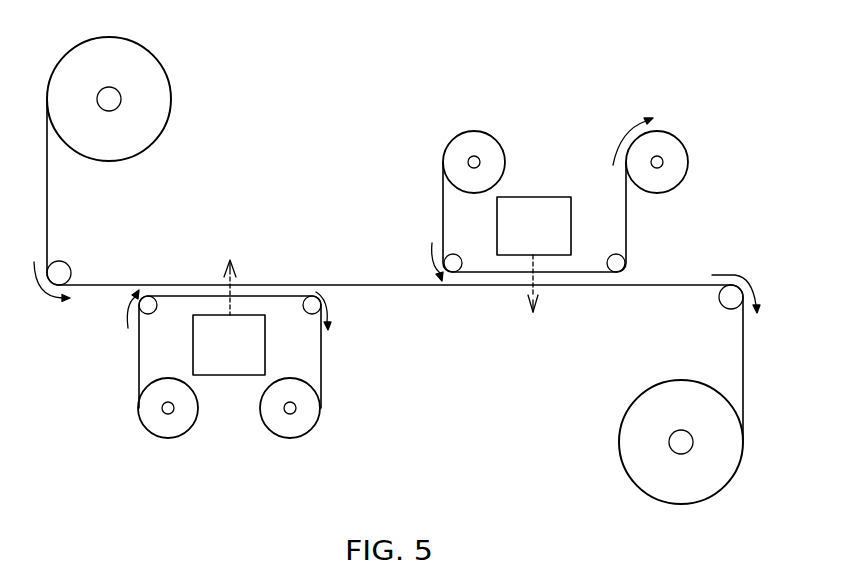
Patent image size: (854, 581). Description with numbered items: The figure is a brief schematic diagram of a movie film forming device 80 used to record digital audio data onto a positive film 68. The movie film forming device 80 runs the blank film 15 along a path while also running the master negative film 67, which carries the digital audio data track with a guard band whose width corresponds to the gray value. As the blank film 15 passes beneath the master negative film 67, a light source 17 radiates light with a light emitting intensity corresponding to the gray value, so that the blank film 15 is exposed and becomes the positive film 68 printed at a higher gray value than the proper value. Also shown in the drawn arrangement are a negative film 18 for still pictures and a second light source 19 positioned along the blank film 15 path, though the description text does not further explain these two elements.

The movie film forming device 80 is at (457, 50).
The blank film 15 is at (47, 208).
The master negative film 67 is at (443, 203).
The light source 17 is at (571, 237).
The negative film (still picture) 18 is at (320, 358).
The light source 19 is at (193, 336).
The positive film 68 is at (743, 381).